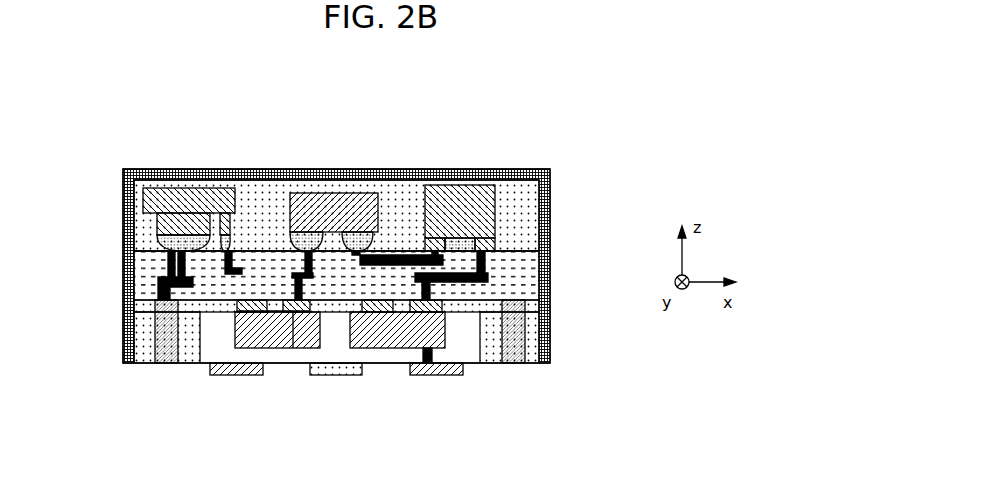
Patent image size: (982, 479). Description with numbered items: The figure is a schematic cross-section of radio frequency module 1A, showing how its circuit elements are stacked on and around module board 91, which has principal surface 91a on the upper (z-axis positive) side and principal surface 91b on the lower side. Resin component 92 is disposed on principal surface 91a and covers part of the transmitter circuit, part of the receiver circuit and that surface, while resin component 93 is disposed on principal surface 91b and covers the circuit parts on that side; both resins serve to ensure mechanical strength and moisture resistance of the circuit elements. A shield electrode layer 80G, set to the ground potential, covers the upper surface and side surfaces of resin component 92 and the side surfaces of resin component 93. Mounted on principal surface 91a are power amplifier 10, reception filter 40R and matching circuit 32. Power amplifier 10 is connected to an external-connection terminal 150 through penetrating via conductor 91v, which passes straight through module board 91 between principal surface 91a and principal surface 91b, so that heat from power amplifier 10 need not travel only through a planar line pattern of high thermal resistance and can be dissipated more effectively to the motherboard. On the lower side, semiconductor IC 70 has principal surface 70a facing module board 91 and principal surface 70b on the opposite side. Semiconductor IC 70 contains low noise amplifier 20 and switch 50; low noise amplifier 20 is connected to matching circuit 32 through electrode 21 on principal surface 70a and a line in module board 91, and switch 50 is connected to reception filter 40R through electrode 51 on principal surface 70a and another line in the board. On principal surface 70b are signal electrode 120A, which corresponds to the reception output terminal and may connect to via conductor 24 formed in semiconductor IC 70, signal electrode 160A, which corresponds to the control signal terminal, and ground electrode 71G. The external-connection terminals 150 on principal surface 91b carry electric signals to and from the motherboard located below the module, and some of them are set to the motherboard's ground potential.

The radio frequency module 1A is at (596, 166).
The shield electrode layer 80G is at (157, 170).
The resin component 92 is at (541, 207).
The module board 91 is at (541, 268).
The principal surface 91a is at (541, 243).
The principal surface 91b is at (541, 312).
The penetrating via conductor 91v is at (157, 293).
The resin component 93 is at (541, 345).
The external-connection terminal 150 is at (165, 366).
The power amplifier 10 is at (212, 190).
The reception filter 40R is at (332, 205).
The matching circuit 32 is at (458, 205).
The principal surface 70a is at (229, 307).
The principal surface 70b is at (290, 358).
The semiconductor IC 70 is at (465, 352).
The electrode 21 is at (447, 304).
The switch 50 is at (275, 352).
The electrode 51 is at (295, 350).
The low noise amplifier 20 is at (393, 350).
The via conductor 24 is at (425, 352).
The signal electrode 160A is at (230, 376).
The ground electrode 71G is at (332, 372).
The signal electrode 120A is at (429, 375).